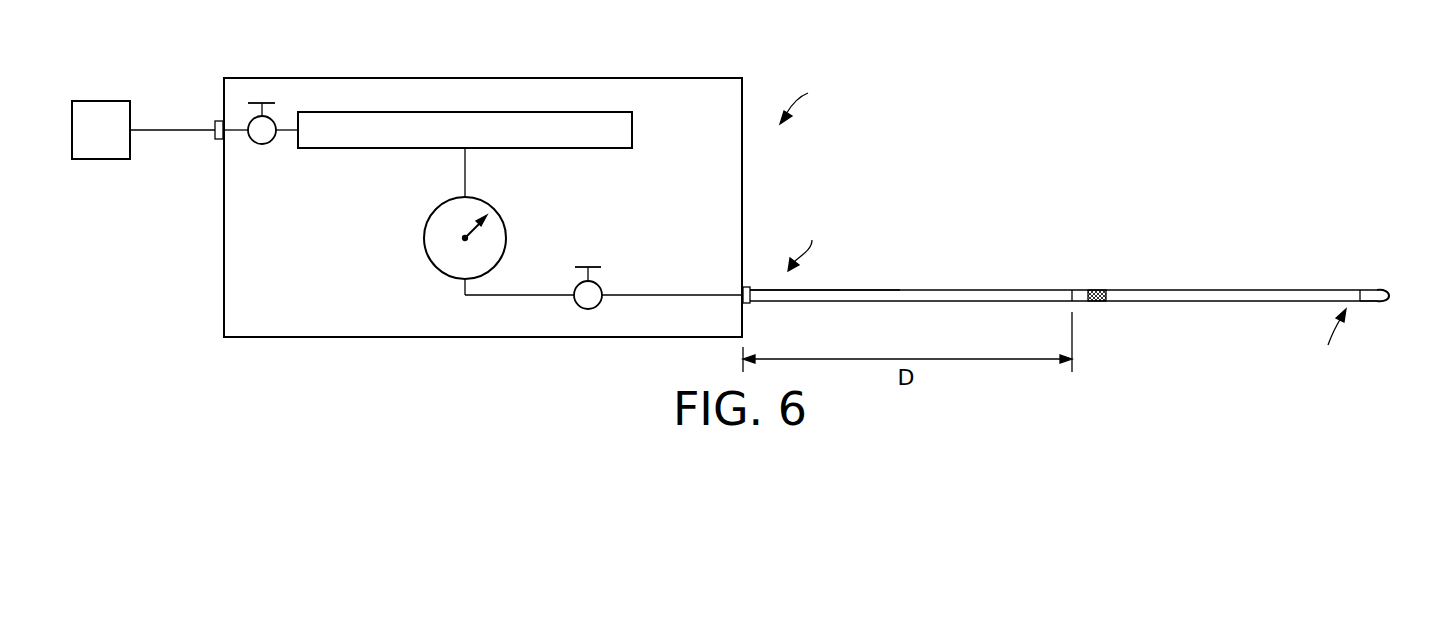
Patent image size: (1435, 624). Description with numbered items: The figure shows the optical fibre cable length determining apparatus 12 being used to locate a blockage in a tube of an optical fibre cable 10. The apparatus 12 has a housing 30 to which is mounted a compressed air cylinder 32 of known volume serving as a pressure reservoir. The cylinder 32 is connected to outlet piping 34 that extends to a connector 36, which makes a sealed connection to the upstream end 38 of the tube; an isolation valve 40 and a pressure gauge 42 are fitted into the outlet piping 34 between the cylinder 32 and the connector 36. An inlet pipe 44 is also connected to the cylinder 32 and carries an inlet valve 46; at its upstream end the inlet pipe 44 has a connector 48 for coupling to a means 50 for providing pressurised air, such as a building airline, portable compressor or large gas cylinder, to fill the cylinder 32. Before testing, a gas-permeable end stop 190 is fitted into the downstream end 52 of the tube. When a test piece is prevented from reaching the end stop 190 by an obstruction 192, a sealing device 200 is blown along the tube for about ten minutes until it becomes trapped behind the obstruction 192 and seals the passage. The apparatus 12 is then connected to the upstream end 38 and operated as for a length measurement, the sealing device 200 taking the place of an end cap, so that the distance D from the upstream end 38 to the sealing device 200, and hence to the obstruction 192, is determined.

The optical fibre cable 10 is at (1268, 290).
The optical fibre cable length determining apparatus 12 is at (807, 102).
The housing 30 is at (720, 78).
The compressed air cylinder 32 is at (612, 149).
The outlet piping 34 is at (465, 168).
The connector 36 is at (748, 286).
The upstream end 38 is at (825, 252).
The isolation valve 40 is at (588, 310).
The pressure gauge 42 is at (425, 238).
The inlet pipe 44 is at (241, 131).
The inlet valve 46 is at (262, 145).
The connector 48 is at (217, 121).
The means for providing pressurised air 50 is at (86, 141).
The downstream end 52 is at (1336, 333).
The end stop 190 is at (1380, 289).
The obstruction 192 is at (1098, 290).
The sealing device 200 is at (1082, 290).